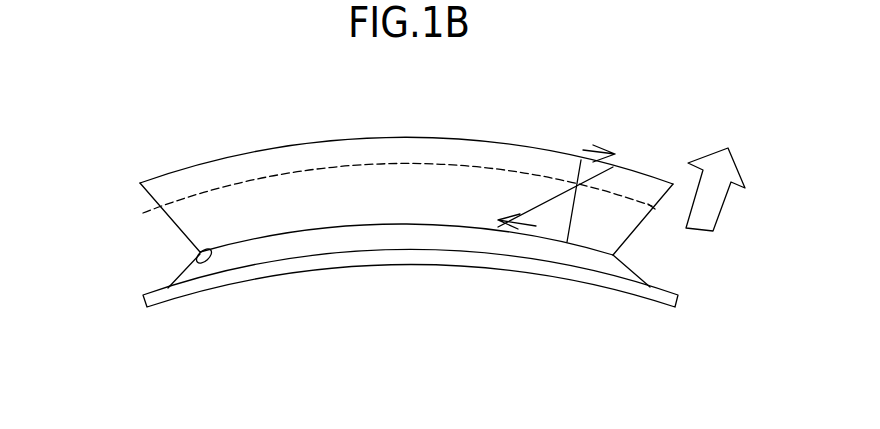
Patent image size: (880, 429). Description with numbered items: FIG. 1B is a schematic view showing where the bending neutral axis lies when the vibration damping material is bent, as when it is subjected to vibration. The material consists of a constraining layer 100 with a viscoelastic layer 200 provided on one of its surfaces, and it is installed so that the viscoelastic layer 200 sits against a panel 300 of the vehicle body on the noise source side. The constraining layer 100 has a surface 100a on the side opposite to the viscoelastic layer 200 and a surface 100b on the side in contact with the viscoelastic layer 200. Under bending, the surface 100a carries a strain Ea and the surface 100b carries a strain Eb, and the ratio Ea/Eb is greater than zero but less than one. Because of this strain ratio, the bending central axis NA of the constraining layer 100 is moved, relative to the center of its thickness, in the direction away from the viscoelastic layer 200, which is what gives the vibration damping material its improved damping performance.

The constraining layer 100 is at (373, 218).
The surface on the side opposite to the viscoelastic layer 100a is at (168, 176).
The surface on the side in contact with the viscoelastic layer 100b is at (190, 265).
The viscoelastic layer 200 is at (633, 271).
The panel 300 is at (637, 300).
The bending central axis NA is at (146, 214).
The strain of the surface opposite to the viscoelastic layer Ea is at (597, 151).
The strain of the surface in contact with the viscoelastic layer Eb is at (538, 225).